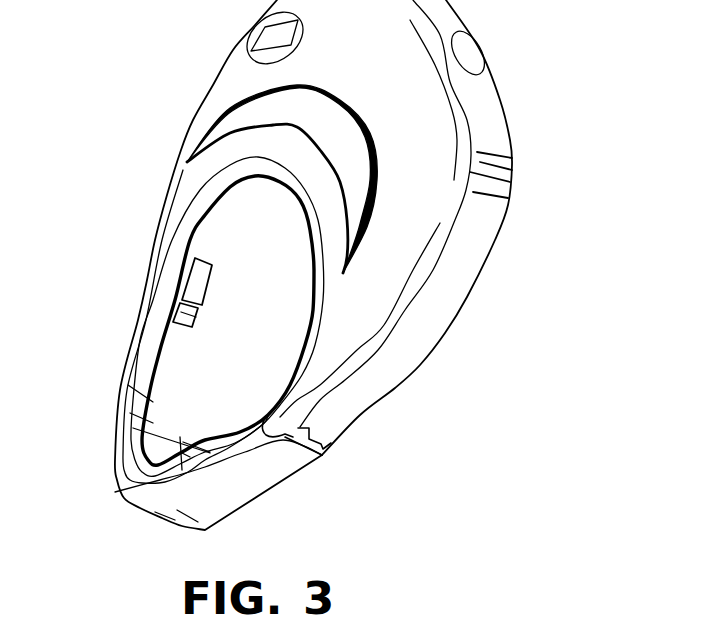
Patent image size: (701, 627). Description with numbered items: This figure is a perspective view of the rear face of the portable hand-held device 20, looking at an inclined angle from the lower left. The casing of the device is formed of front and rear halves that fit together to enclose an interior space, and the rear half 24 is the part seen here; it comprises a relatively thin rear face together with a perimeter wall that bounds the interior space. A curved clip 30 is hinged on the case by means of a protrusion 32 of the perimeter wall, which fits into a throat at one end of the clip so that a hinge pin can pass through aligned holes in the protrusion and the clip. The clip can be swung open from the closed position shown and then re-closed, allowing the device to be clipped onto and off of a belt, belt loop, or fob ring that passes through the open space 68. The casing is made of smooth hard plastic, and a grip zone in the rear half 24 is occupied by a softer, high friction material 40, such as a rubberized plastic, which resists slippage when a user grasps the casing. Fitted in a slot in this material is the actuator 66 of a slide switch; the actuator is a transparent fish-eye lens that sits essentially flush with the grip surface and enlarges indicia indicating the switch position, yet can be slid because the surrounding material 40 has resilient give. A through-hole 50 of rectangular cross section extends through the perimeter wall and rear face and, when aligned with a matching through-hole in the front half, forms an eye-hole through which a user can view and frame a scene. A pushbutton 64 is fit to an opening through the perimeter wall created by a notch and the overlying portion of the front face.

The portable hand-held device 20 is at (560, 202).
The rear half 24 is at (437, 170).
The curved clip 30 is at (140, 495).
The protrusion 32 is at (330, 445).
The high friction material 40 is at (228, 337).
The through-hole 50 is at (273, 35).
The pushbutton 64 is at (473, 52).
The actuator 66 is at (197, 278).
The open space 68 is at (183, 452).